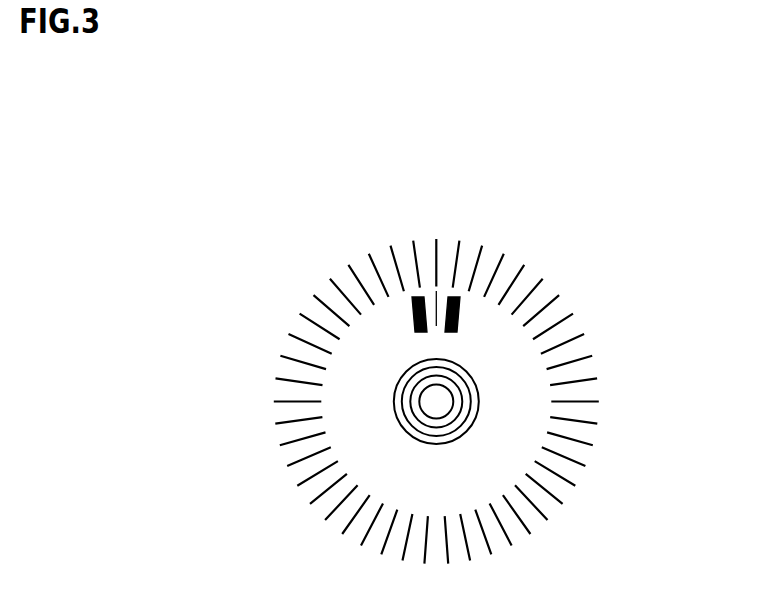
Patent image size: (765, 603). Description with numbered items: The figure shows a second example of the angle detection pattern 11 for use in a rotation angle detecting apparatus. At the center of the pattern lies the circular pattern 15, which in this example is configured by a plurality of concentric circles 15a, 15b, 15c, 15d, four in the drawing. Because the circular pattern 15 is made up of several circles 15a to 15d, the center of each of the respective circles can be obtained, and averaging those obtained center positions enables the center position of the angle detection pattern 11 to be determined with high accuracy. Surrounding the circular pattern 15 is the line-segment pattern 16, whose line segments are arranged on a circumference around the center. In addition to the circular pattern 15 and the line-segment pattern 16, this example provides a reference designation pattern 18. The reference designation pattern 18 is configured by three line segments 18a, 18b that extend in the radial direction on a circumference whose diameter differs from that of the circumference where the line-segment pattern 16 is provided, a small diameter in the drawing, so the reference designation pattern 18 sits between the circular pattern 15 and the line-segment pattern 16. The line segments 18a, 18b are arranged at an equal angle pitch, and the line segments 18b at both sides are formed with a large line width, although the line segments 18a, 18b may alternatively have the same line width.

The angle detection pattern 11 is at (403, 232).
The circular pattern 15 is at (400, 432).
The concentric circle 15a is at (480, 405).
The concentric circle 15b is at (470, 417).
The concentric circle 15c is at (412, 405).
The concentric circle 15d is at (432, 392).
The line-segment pattern 16 is at (572, 318).
The reference designation pattern 18 is at (403, 310).
The line segment 18a is at (437, 322).
The line segment 18b is at (460, 303).